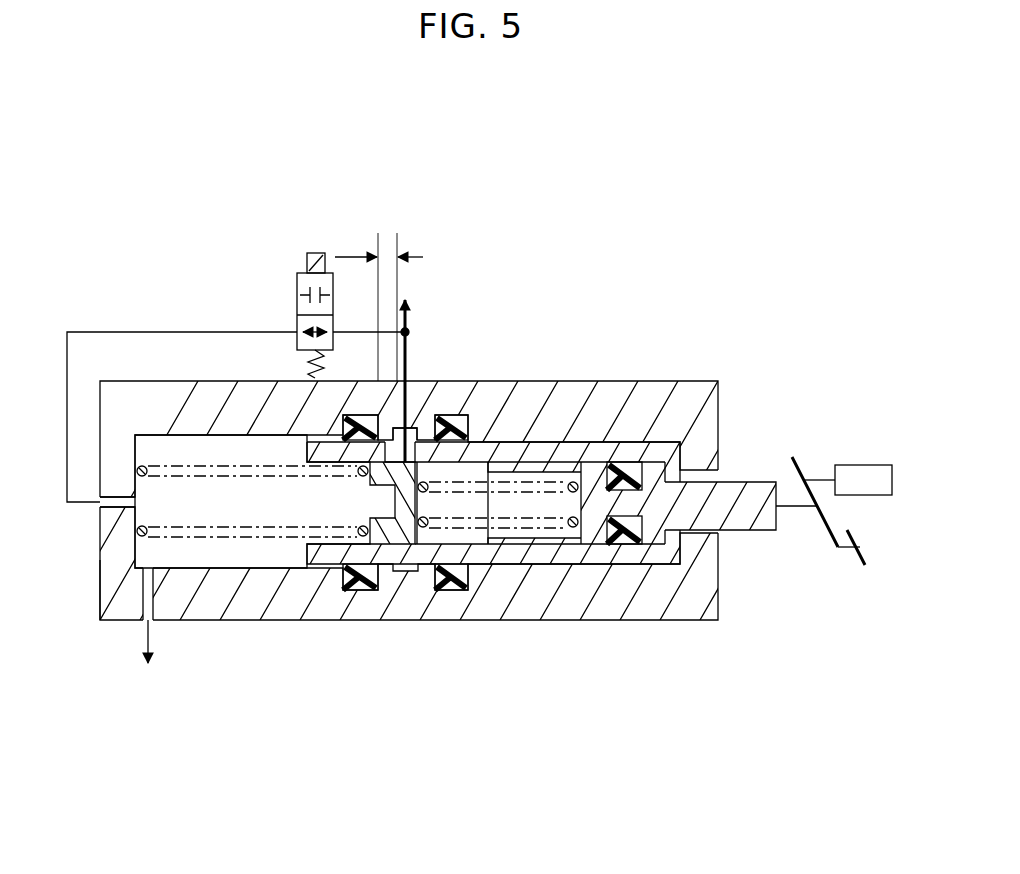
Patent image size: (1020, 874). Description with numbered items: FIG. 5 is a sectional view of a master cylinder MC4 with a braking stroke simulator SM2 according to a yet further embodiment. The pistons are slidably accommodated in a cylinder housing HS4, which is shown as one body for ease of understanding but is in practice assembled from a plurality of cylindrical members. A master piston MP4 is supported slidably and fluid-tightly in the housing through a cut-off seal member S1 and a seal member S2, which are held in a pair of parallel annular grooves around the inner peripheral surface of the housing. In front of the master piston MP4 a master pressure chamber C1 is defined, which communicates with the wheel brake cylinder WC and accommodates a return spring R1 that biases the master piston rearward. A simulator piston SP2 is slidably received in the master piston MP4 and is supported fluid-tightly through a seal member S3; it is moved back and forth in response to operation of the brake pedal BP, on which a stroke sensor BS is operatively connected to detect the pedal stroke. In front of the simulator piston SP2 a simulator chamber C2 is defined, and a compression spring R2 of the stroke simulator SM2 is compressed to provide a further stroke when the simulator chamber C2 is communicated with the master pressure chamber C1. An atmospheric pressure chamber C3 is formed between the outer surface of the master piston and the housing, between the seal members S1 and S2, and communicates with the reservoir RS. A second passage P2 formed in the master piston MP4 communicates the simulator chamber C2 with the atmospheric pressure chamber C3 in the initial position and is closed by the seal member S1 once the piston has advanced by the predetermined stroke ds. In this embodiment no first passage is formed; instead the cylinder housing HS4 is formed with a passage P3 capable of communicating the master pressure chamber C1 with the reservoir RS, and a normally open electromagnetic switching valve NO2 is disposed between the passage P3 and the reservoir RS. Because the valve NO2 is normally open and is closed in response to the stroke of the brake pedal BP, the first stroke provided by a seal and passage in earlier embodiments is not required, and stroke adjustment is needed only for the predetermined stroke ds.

The master cylinder MC4 is at (158, 378).
The stroke simulator SM2 is at (672, 378).
The cylinder housing HS4 is at (112, 582).
The passage P3 is at (113, 506).
The wheel brake cylinder WC is at (147, 658).
The master pressure chamber C1 is at (227, 550).
The return spring R1 is at (223, 467).
The seal member S1 is at (352, 590).
The seal member S2 is at (460, 590).
The master piston MP4 is at (545, 560).
The second passage P2 is at (413, 430).
The simulator chamber C2 is at (473, 540).
The compression spring R2 is at (517, 485).
The seal member S3 is at (638, 548).
The simulator piston SP2 is at (737, 508).
The atmospheric pressure chamber C3 is at (402, 462).
The reservoir RS is at (382, 366).
The predetermined stroke ds is at (379, 293).
The normally open electromagnetic switching valve NO2 is at (297, 312).
The brake pedal BP is at (868, 553).
The stroke sensor BS is at (845, 465).